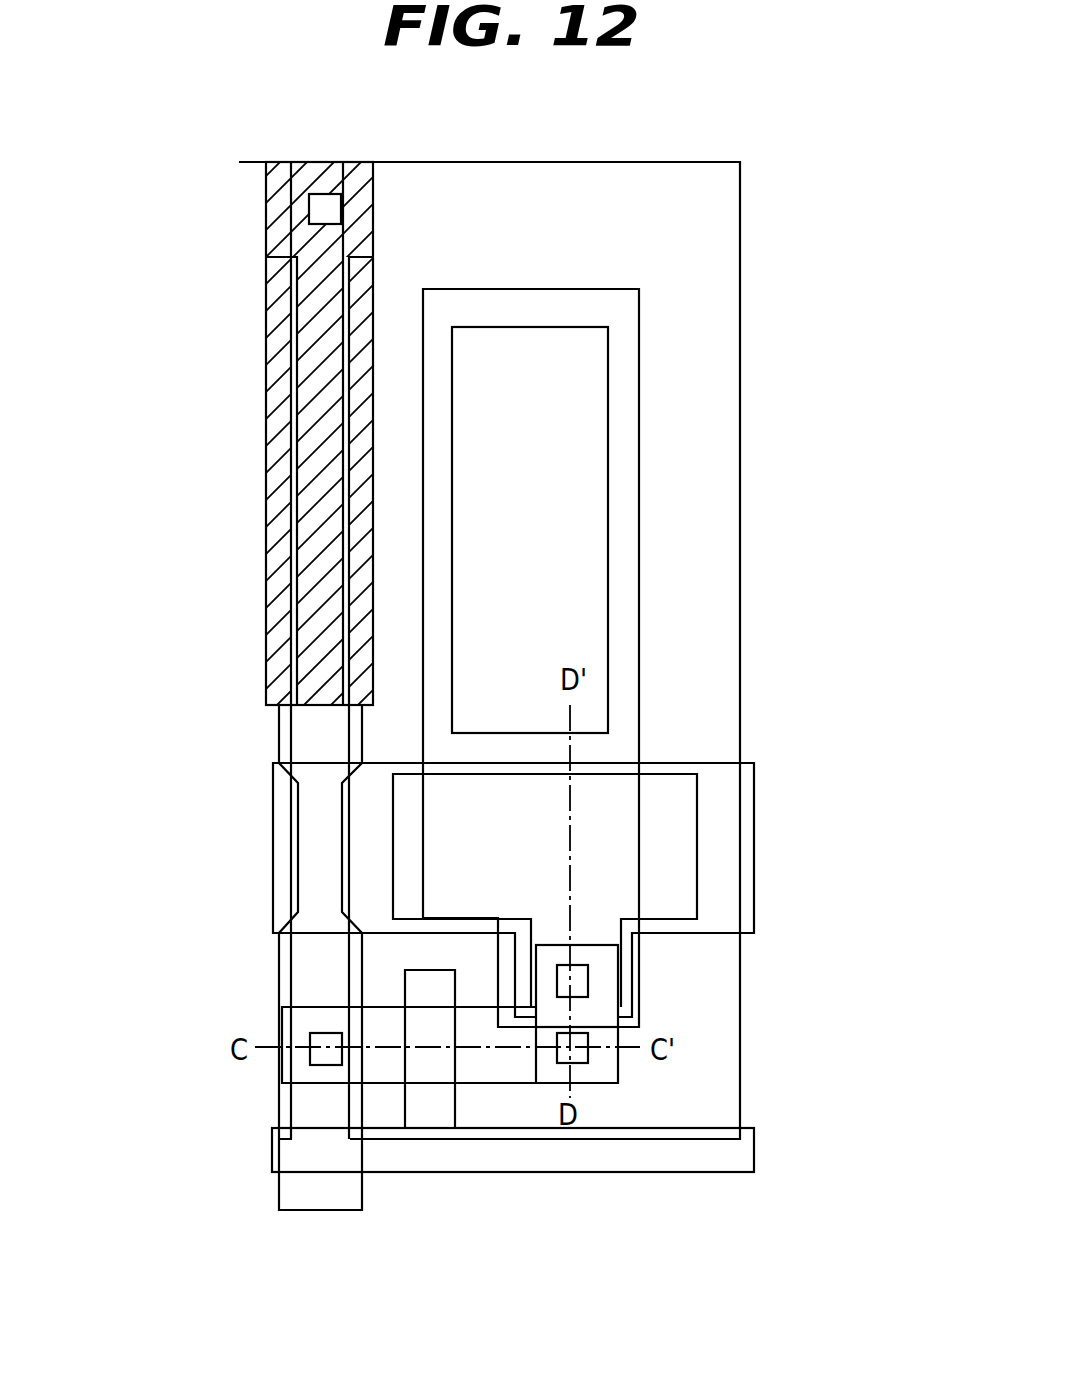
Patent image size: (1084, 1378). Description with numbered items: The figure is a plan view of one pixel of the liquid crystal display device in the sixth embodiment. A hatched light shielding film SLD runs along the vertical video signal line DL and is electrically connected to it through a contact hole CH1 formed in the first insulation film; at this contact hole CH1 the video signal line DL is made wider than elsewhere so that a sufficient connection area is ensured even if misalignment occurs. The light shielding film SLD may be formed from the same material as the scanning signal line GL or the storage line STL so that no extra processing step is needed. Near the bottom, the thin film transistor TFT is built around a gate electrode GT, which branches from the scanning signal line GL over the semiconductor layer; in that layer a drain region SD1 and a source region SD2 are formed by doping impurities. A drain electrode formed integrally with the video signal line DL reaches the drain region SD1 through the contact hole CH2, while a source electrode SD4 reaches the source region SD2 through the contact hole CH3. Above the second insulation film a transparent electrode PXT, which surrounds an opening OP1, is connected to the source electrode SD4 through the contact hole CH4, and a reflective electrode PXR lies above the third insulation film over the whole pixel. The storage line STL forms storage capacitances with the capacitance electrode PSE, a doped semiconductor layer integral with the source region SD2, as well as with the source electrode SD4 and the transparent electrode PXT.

The contact hole CH1 is at (325, 194).
The transparent electrode PXT is at (545, 289).
The reflective electrode PXR is at (742, 318).
The light shielding film SLD is at (265, 411).
The opening OP1 is at (607, 526).
The storage line STL is at (712, 763).
The video signal line DL is at (279, 728).
The capacitance electrode PSE is at (692, 845).
The source electrode SD4 is at (592, 942).
The contact hole CH2 is at (322, 1033).
The contact hole CH4 is at (590, 978).
The contact hole CH3 is at (590, 1053).
The gate electrode GT is at (436, 1068).
The source region SD2 is at (513, 1085).
The scanning signal line GL is at (636, 1160).
The drain region SD1 is at (396, 1090).
The thin film transistor TFT is at (436, 1203).